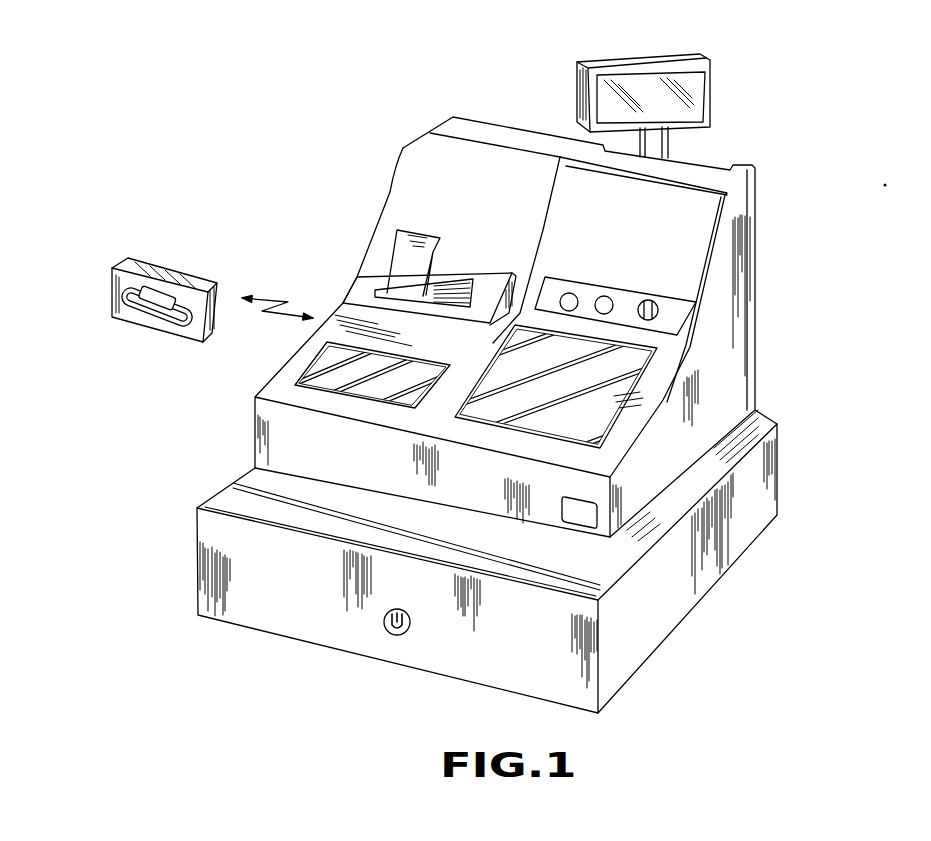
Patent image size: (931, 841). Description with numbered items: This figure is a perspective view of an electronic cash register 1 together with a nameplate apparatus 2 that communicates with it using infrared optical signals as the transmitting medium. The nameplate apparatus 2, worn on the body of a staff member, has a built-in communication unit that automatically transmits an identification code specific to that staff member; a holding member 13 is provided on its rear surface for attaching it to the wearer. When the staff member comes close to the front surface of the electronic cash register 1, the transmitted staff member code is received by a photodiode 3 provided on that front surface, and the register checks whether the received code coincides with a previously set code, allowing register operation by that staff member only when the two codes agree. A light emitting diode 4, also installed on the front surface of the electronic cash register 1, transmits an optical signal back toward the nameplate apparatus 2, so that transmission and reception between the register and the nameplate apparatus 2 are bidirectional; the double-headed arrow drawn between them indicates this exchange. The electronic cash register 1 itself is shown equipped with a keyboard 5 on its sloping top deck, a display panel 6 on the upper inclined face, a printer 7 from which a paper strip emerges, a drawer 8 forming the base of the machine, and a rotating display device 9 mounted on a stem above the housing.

The electronic cash register 1 is at (790, 411).
The nameplate apparatus 2 is at (178, 322).
The photodiode 3 is at (577, 295).
The light emitting diode 4 is at (612, 300).
The keyboard 5 is at (520, 422).
The display panel 6 is at (573, 196).
The printer 7 is at (390, 287).
The drawer 8 is at (657, 627).
The rotating display device 9 is at (678, 74).
The holding member 13 is at (120, 318).